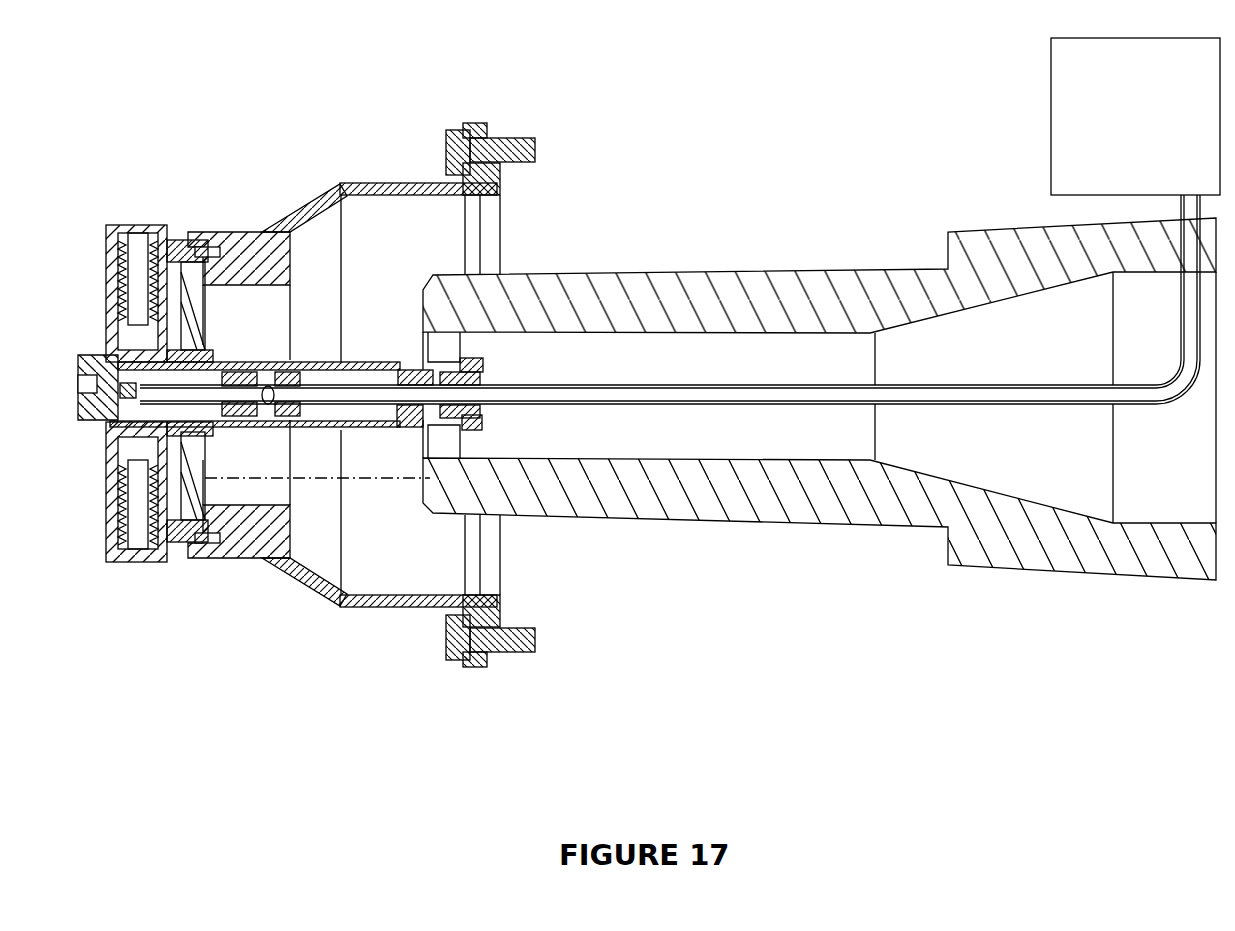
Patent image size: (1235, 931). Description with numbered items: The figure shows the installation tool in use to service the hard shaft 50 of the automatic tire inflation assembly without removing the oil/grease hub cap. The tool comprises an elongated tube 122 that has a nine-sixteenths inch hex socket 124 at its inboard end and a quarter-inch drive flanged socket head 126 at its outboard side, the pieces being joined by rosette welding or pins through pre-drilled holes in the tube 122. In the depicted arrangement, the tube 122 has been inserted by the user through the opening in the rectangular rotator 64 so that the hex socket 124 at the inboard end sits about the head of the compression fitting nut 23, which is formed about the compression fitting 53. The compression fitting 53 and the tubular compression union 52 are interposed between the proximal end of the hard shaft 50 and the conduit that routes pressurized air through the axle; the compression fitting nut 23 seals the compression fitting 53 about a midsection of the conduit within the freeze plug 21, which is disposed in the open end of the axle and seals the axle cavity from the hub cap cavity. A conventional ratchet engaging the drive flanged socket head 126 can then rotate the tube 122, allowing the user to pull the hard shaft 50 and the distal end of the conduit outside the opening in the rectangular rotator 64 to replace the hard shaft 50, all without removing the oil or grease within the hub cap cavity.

The freeze plug 21 is at (457, 335).
The compression fitting nut 23 is at (405, 407).
The hard shaft 50 is at (185, 383).
The tubular compression union 52 is at (268, 397).
The compression fitting 53 is at (490, 383).
The rectangular rotator 64 is at (108, 320).
The elongated tube 122 is at (335, 365).
The hex socket 124 is at (410, 365).
The drive flanged socket head 126 is at (82, 366).